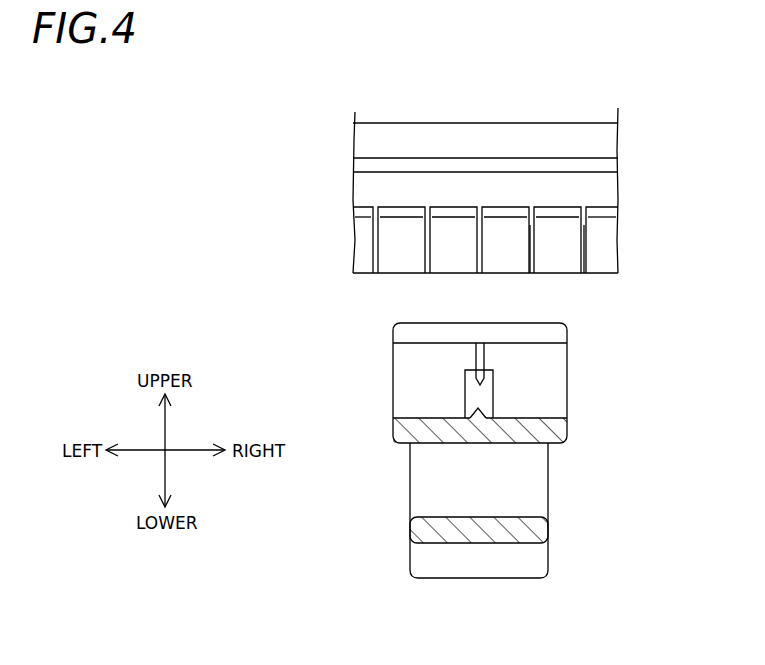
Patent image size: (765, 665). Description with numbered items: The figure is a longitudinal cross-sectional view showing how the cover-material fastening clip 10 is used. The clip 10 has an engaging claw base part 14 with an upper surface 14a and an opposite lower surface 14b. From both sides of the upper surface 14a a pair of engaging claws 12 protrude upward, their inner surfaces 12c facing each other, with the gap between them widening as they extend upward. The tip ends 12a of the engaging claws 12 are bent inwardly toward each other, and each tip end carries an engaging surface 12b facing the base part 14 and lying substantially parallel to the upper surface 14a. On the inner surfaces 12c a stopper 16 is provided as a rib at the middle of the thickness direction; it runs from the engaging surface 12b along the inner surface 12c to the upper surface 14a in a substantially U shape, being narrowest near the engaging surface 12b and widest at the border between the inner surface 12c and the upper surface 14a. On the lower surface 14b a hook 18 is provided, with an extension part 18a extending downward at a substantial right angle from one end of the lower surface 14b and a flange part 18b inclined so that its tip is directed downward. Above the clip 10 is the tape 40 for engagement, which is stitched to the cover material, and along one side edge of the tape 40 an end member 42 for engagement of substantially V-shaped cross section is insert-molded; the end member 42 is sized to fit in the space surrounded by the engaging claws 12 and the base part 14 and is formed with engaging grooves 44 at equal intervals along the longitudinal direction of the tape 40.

The cover-material fastening clip 10 is at (638, 337).
The engaging claws 12 is at (557, 377).
The tip ends 12a is at (423, 330).
The engaging surface 12b is at (413, 348).
The inner surfaces 12c is at (425, 393).
The engaging claw base part 14 is at (545, 433).
The upper surface 14a is at (545, 418).
The lower surface 14b is at (548, 443).
The stopper 16 is at (484, 360).
The hook 18 is at (422, 488).
The extension part 18a is at (525, 502).
The flange part 18b is at (487, 557).
The tape for engagement 40 is at (522, 140).
The end member for engagement 42 is at (457, 212).
The engaging grooves 44 is at (530, 233).